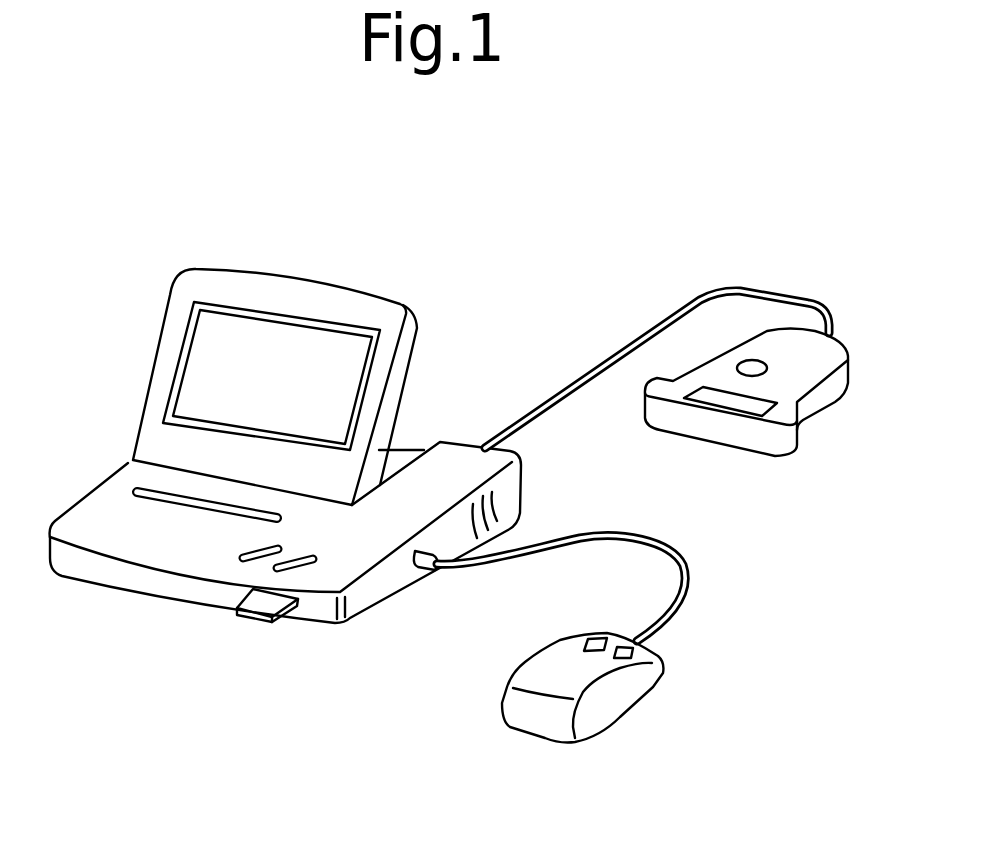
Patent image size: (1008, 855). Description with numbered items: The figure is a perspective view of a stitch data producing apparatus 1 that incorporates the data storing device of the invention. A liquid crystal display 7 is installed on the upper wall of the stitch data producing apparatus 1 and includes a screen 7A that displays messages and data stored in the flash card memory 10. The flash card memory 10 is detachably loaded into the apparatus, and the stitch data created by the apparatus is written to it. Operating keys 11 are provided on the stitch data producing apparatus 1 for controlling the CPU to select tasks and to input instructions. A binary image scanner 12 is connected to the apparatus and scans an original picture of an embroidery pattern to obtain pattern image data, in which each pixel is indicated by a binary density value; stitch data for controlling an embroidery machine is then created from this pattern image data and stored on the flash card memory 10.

The stitch data producing apparatus 1 is at (106, 388).
The liquid crystal display 7 is at (360, 297).
The screen 7A is at (265, 332).
The flash card memory 10 is at (262, 598).
The operating keys 11 is at (633, 692).
The binary image scanner 12 is at (821, 398).